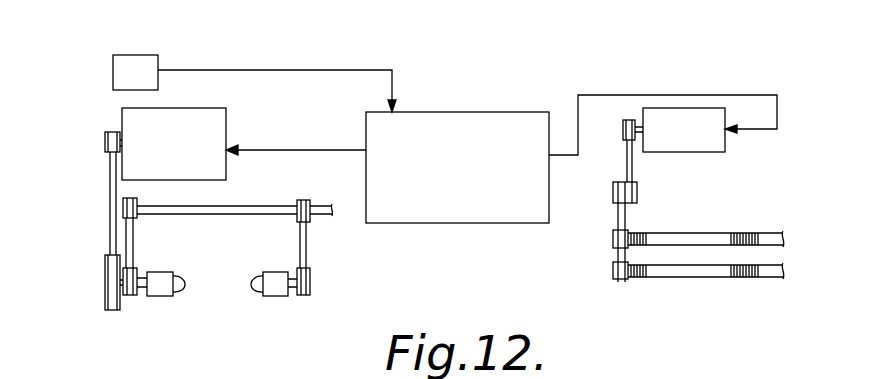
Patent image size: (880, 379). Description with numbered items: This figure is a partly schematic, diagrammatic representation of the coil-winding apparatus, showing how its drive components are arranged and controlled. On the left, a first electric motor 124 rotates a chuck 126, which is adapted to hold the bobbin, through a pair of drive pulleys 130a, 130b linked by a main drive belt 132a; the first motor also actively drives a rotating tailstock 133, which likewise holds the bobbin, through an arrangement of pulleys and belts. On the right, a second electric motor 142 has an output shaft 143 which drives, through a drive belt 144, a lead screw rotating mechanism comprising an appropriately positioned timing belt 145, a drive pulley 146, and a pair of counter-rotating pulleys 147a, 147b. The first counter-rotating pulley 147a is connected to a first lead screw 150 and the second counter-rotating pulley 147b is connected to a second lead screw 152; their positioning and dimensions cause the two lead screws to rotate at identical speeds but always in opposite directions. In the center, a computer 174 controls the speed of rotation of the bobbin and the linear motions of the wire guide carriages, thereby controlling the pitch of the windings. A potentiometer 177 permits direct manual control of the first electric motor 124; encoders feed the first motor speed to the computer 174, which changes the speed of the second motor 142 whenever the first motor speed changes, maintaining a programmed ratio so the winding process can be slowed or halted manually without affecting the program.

The potentiometer 177 is at (143, 58).
The first electric motor 124 is at (195, 110).
The computer 174 is at (515, 112).
The drive pulley 130a is at (105, 141).
The drive pulley 130b is at (105, 287).
The main drive belt 132a is at (108, 207).
The chuck 126 is at (160, 288).
The rotating tailstock 133 is at (275, 288).
The second electric motor 142 is at (712, 152).
The output shaft 143 is at (623, 128).
The drive belt 144 is at (632, 166).
The drive pulley 146 is at (613, 190).
The timing belt 145 is at (618, 216).
The first counter-rotating pulley 147a is at (612, 276).
The second counter-rotating pulley 147b is at (613, 240).
The first lead screw 150 is at (750, 279).
The second lead screw 152 is at (768, 233).